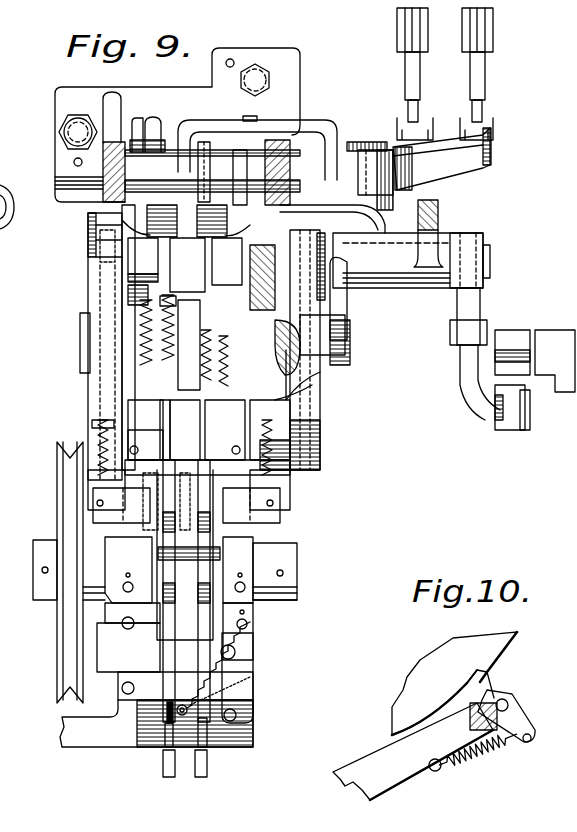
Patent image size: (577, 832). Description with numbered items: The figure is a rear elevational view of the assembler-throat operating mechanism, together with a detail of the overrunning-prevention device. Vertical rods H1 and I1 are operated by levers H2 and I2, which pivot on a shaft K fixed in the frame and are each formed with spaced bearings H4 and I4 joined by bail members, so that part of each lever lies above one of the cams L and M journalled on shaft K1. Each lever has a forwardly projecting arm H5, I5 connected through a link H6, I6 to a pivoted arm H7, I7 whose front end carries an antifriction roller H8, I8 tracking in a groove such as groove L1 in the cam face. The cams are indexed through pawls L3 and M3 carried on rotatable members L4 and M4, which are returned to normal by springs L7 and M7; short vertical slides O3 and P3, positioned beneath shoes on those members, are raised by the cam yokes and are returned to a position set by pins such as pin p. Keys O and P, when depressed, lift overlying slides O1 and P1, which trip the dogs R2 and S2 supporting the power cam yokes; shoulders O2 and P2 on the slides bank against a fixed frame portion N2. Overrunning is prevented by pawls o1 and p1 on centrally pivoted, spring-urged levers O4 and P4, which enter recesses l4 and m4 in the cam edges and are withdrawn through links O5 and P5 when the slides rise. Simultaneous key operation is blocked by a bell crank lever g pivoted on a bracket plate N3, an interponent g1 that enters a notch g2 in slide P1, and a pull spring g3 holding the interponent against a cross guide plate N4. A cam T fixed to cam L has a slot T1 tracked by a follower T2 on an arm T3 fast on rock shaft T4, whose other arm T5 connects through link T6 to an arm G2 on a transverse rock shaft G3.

In FIG. 9, the link I6 is at (143, 120).
In FIG. 9, the forwardly projecting arm I5 is at (160, 122).
In FIG. 9, the forwardly projecting arm H5 is at (215, 120).
In FIG. 9, the link H6 is at (250, 116).
In FIG. 9, the spaced bearing I4 is at (192, 165).
In FIG. 9, the spaced bearing H4 is at (313, 180).
In FIG. 9, the vertical rod I1 is at (397, 38).
In FIG. 9, the vertical rod H1 is at (493, 30).
In FIG. 9, the lever H2 is at (460, 170).
In FIG. 9, the lever I2 is at (370, 142).
In FIG. 9, the shaft K is at (418, 160).
In FIG. 9, the cam M is at (90, 395).
In FIG. 9, the antifriction roller I8 is at (103, 263).
In FIG. 9, the recess m4 is at (90, 335).
In FIG. 9, the pivotally mounted arm I7 is at (143, 260).
In FIG. 9, the spring M7 is at (187, 265).
In FIG. 9, the pivotally mounted arm H7 is at (227, 261).
In FIG. 9, the antifriction roller H8 is at (292, 245).
In FIG. 9, the pawl M3 is at (142, 288).
In FIG. 9, the spring L7 is at (172, 295).
In FIG. 9, the pawl L3 is at (200, 320).
In FIG. 9, the groove L1 is at (278, 329).
In FIG. 9, the recess l4 is at (218, 379).
In FIG. 10, the recess l4 is at (462, 688).
In FIG. 9, the cam T is at (325, 432).
In FIG. 9, the arm T3 is at (335, 300).
In FIG. 9, the cam follower T2 is at (320, 335).
In FIG. 9, the shaft K1 is at (350, 345).
In FIG. 9, the rock shaft T4 is at (490, 258).
In FIG. 9, the arm T5 is at (475, 300).
In FIG. 9, the link T6 is at (476, 405).
In FIG. 9, the arm G2 is at (500, 400).
In FIG. 9, the rock shaft G3 is at (565, 330).
In FIG. 9, the pawl p1 is at (106, 410).
In FIG. 9, the pin p is at (170, 400).
In FIG. 9, the member M4 is at (150, 400).
In FIG. 9, the short vertical slide P3 is at (145, 445).
In FIG. 9, the short vertical slide O3 is at (225, 430).
In FIG. 9, the slot T1 is at (278, 385).
In FIG. 9, the cam L is at (300, 392).
In FIG. 10, the cam L is at (500, 648).
In FIG. 9, the pawl o1 is at (305, 398).
In FIG. 10, the pawl o1 is at (502, 690).
In FIG. 9, the centrally pivoted lever O4 is at (280, 470).
In FIG. 10, the centrally pivoted lever O4 is at (358, 765).
In FIG. 9, the centrally pivoted lever P4 is at (100, 490).
In FIG. 9, the trip dog S2 is at (168, 535).
In FIG. 9, the trip dog R2 is at (205, 545).
In FIG. 9, the link O5 is at (238, 570).
In FIG. 9, the shoulder P2 is at (175, 610).
In FIG. 9, the shoulder O2 is at (195, 591).
In FIG. 9, the bracket plate N3 is at (253, 625).
In FIG. 9, the link P5 is at (122, 625).
In FIG. 9, the fixed portion of supporting frame N2 is at (118, 648).
In FIG. 9, the bell crank lever g is at (253, 660).
In FIG. 9, the pull spring g3 is at (252, 678).
In FIG. 9, the interponent g1 is at (184, 704).
In FIG. 9, the cross guide plate N4 is at (123, 702).
In FIG. 9, the notch g2 is at (167, 712).
In FIG. 9, the slide O1 is at (207, 735).
In FIG. 9, the slide P1 is at (165, 738).
In FIG. 9, the key P is at (165, 775).
In FIG. 9, the key O is at (200, 775).